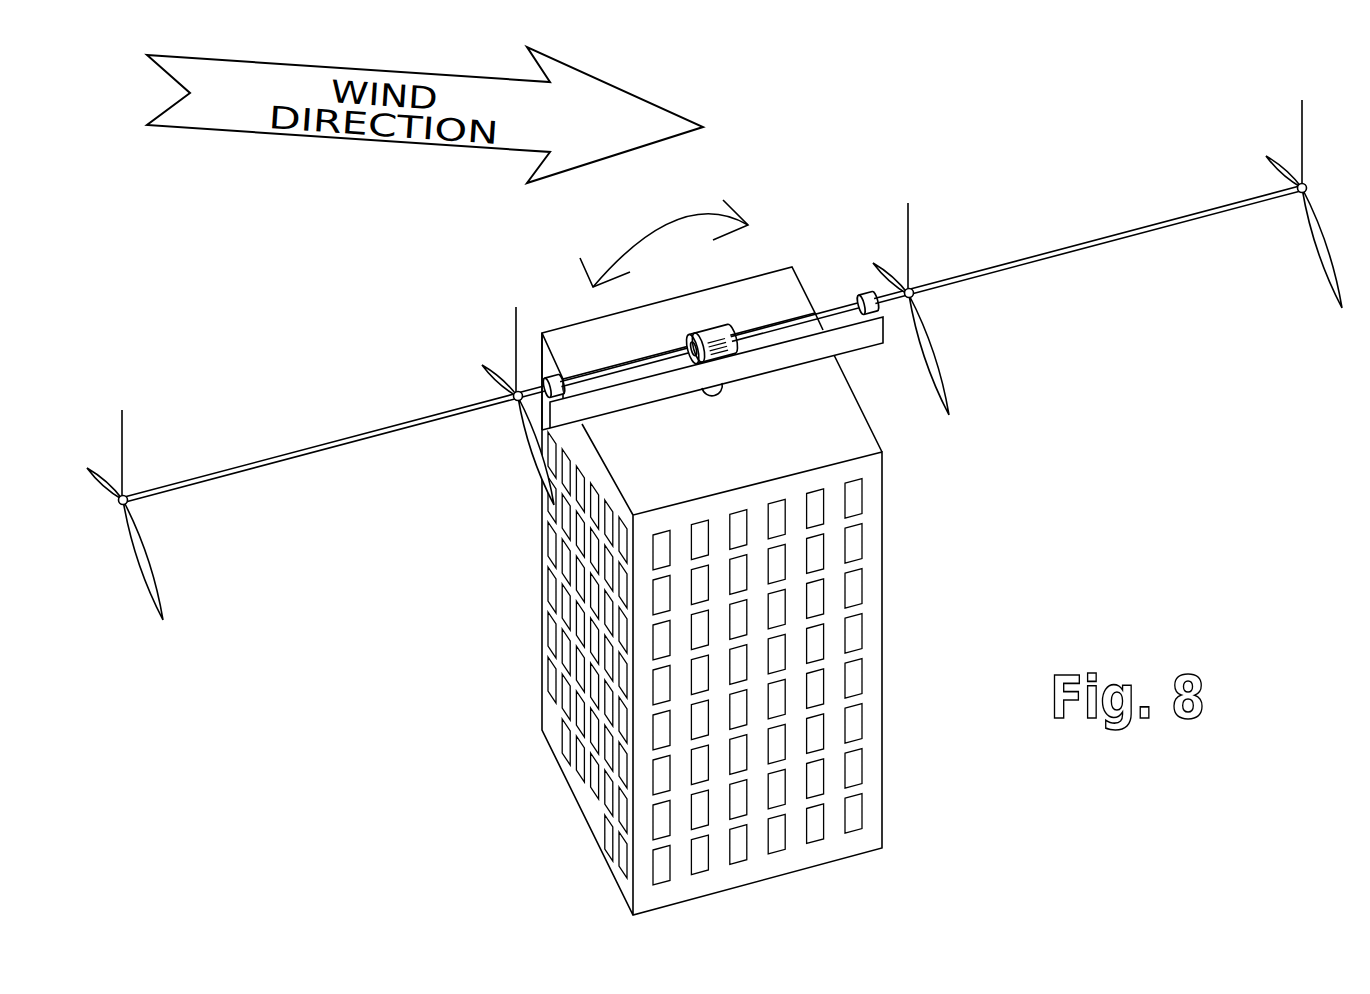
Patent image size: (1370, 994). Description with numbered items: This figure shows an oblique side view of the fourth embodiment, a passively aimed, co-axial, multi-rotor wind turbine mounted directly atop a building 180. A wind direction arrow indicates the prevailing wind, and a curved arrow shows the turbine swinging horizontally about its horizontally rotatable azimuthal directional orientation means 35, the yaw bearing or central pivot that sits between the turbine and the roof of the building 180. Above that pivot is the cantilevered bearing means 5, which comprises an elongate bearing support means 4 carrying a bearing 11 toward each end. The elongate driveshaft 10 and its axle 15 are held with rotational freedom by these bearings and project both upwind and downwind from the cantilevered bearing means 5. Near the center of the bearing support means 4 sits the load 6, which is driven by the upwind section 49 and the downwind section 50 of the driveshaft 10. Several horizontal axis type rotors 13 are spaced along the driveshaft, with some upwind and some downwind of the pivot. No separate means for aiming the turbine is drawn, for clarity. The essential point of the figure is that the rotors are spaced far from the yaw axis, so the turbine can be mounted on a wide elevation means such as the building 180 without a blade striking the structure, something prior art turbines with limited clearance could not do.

The bearing support means 4 is at (850, 350).
The cantilevered bearing means 5 is at (554, 301).
The load 6 is at (700, 330).
The elongate driveshaft 10 is at (335, 494).
The bearing 11 is at (865, 310).
The horizontal axis type rotor 13 is at (157, 589).
The axle 15 is at (833, 309).
The horizontally rotatable azimuthal directional orientation means (yaw bearing) 35 is at (722, 392).
The upwind section of the driveshaft 49 is at (243, 475).
The downwind section of the driveshaft 50 is at (1078, 255).
The building 180 is at (882, 570).